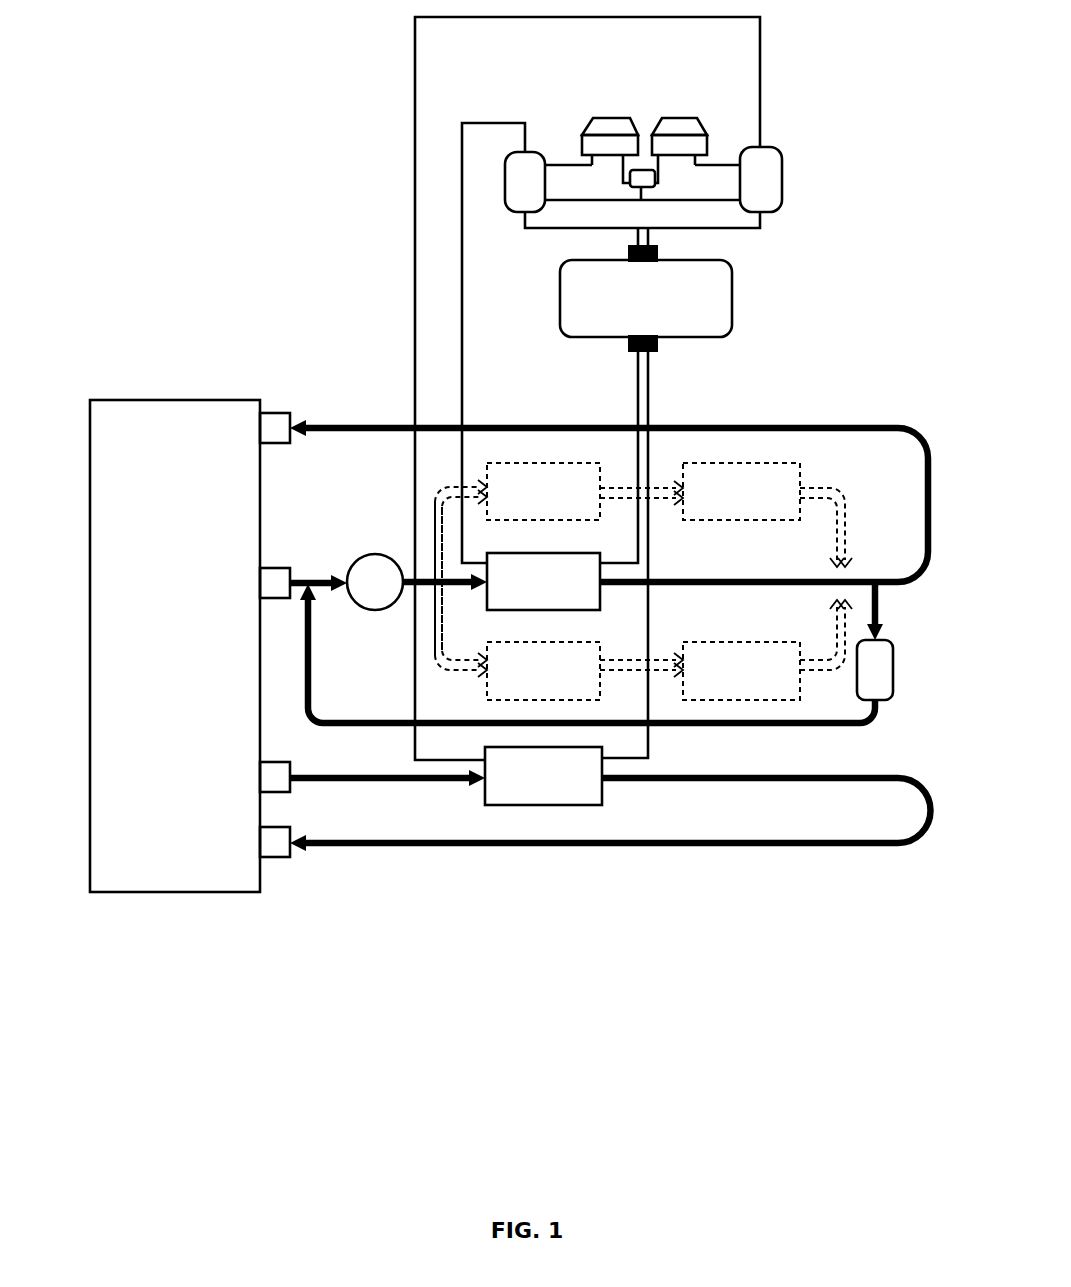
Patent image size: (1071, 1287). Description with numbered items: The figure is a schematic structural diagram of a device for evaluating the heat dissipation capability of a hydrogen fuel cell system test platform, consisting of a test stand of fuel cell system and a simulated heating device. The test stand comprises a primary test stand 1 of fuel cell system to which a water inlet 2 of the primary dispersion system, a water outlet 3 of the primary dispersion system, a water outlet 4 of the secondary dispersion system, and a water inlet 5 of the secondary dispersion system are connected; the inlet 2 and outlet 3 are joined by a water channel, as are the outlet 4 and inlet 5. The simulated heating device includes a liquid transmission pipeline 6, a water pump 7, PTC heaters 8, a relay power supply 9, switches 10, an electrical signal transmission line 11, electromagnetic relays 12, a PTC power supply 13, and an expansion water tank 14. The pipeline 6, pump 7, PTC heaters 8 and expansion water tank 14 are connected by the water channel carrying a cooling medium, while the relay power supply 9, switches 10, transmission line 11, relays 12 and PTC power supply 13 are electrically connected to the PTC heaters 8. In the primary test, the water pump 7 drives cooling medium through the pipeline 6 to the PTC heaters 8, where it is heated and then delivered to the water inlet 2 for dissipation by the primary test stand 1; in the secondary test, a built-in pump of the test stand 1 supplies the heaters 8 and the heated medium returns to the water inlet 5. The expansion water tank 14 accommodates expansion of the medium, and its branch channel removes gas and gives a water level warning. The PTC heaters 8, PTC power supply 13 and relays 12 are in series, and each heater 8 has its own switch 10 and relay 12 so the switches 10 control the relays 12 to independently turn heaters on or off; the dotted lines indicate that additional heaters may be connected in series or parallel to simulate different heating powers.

The primary test stand of fuel cell system 1 is at (105, 700).
The water inlet of primary dispersion system 2 is at (273, 413).
The water outlet of primary dispersion system 3 is at (275, 568).
The water outlet of secondary dispersion system 4 is at (275, 762).
The water inlet of secondary dispersion system 5 is at (277, 857).
The liquid transmission pipeline 6 is at (325, 583).
The water pump 7 is at (385, 580).
The PTC heater 8 is at (543, 805).
The relay power supply 9 is at (641, 170).
The switch 10 is at (684, 118).
The electrical signal transmission line 11 is at (767, 75).
The electromagnetic relay 12 is at (772, 187).
The PTC power supply 13 is at (720, 302).
The expansion water tank 14 is at (893, 670).